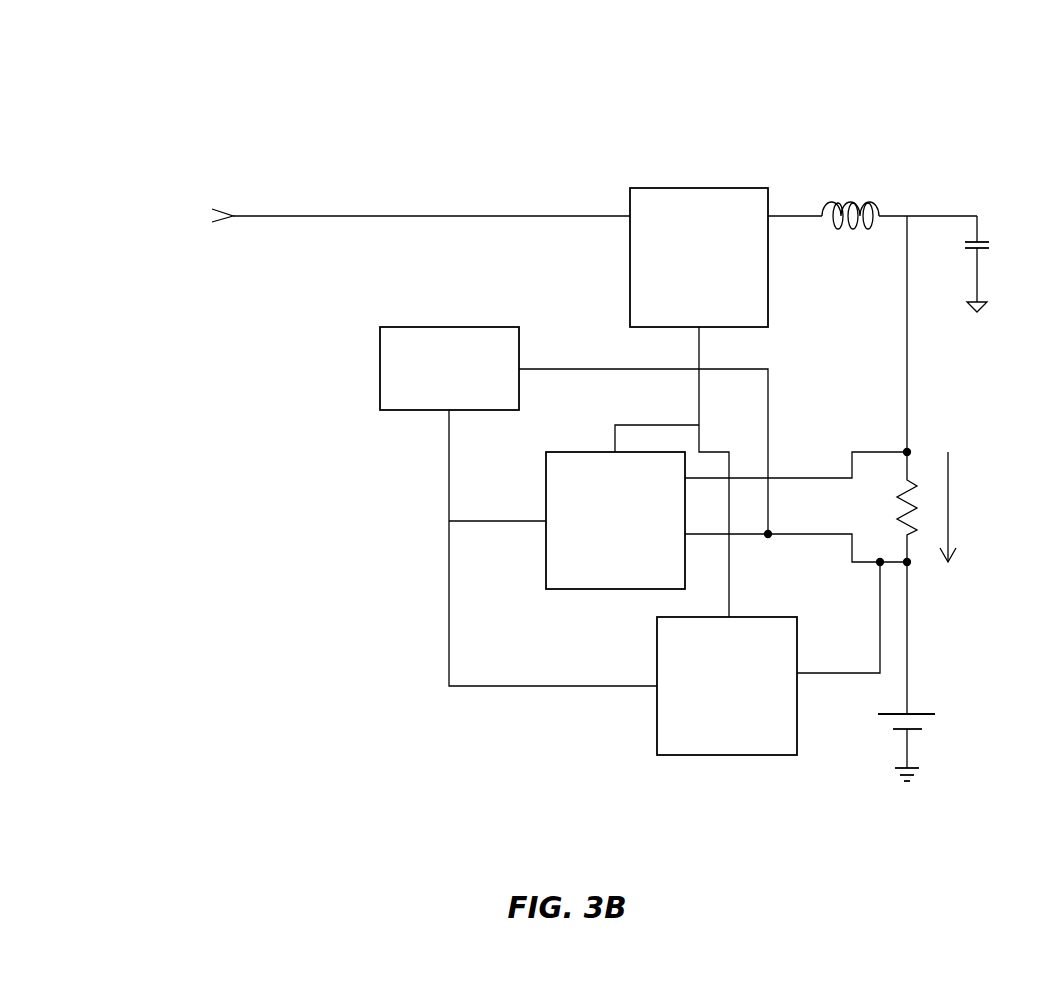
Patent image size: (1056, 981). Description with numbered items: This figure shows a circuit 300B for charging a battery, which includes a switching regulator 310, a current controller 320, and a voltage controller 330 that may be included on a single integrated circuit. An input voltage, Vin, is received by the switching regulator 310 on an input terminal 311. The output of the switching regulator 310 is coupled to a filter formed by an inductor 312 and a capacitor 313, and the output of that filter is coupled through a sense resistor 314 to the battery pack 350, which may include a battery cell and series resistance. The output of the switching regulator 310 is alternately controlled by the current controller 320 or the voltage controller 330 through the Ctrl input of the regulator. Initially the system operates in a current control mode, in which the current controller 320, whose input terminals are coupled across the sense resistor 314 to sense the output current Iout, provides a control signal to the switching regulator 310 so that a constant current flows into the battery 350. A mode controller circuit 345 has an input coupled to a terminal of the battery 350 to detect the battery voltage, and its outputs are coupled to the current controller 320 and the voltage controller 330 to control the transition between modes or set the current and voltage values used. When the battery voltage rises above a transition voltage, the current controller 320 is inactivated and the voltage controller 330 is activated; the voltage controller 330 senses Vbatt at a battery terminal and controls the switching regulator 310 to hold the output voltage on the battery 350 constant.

The circuit 300B is at (168, 48).
The switching regulator 310 is at (697, 188).
The input terminal 311 is at (333, 216).
The inductor 312 is at (858, 203).
The capacitor 313 is at (1000, 229).
The sense resistor 314 is at (912, 470).
The current controller 320 is at (592, 590).
The voltage controller 330 is at (722, 757).
The mode controller circuit 345 is at (447, 327).
The battery pack 350 is at (922, 671).